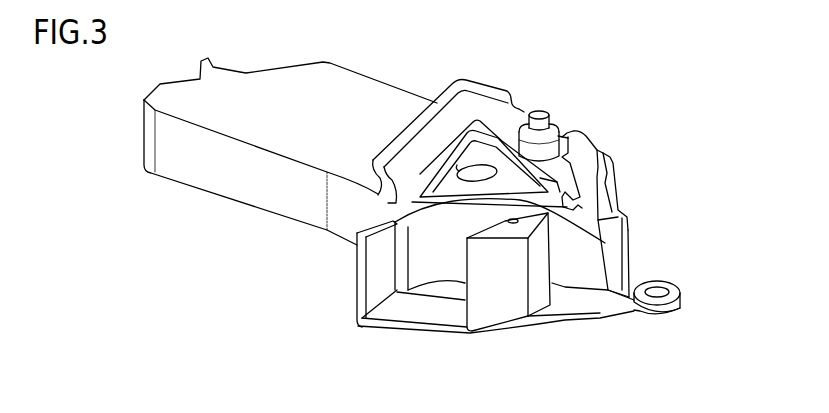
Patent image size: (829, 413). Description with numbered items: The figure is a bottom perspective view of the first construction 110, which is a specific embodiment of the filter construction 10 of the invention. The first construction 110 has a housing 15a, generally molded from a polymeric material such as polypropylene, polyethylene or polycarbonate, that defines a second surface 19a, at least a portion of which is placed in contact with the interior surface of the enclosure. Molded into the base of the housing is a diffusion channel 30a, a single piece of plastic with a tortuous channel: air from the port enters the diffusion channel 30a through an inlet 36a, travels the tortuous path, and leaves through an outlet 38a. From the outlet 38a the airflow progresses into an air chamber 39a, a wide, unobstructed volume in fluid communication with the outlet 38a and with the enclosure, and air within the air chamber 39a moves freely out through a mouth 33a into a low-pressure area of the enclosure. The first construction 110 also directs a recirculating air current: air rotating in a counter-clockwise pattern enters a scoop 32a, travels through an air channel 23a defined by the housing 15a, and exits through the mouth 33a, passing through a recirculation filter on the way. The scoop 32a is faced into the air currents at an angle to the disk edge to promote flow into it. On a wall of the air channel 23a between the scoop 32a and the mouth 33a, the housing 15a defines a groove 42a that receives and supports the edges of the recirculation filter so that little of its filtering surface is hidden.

The filter construction 10 is at (622, 72).
The first construction 110 is at (648, 105).
The second surface 19a is at (263, 78).
The air chamber 39a is at (442, 117).
The diffusion channel 30a is at (507, 152).
The outlet 38a is at (461, 169).
The inlet 36a is at (578, 180).
The air channel 23a is at (554, 256).
The mouth 33a is at (550, 258).
The scoop 32a is at (360, 277).
The groove 42a is at (423, 293).
The housing 15a is at (497, 307).